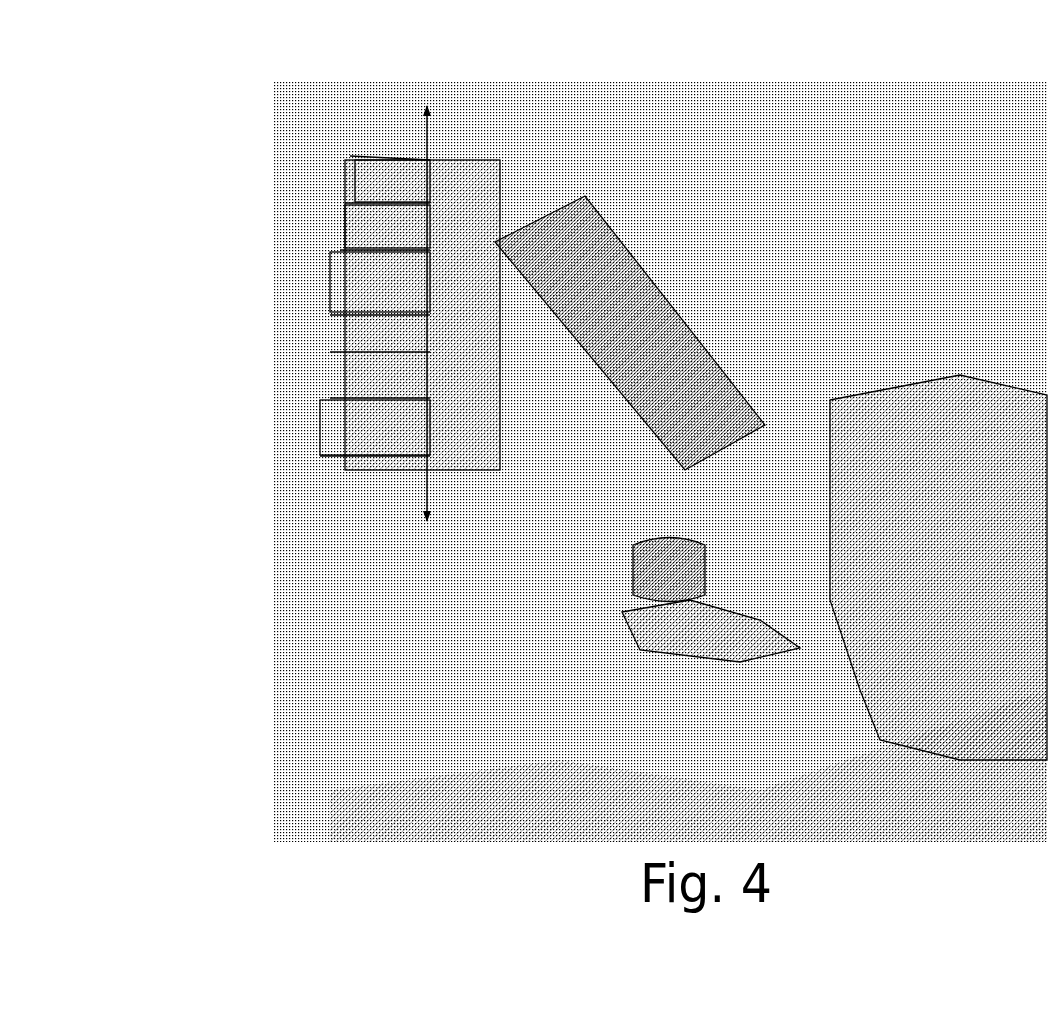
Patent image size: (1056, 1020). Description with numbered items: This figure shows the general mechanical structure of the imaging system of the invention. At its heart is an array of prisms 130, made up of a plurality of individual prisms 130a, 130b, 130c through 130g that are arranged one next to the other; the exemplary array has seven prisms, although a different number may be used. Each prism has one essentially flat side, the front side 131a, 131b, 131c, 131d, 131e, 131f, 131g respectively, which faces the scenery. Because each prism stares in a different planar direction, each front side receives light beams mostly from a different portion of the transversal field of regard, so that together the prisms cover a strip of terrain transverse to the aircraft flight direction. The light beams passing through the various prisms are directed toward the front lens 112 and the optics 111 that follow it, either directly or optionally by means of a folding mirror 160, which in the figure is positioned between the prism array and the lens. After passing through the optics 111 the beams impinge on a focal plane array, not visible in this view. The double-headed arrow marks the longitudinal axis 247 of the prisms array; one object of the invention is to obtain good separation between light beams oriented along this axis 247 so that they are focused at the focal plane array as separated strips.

The array of prisms 130 is at (413, 165).
The prism 130a is at (367, 163).
The prism 130b is at (343, 222).
The prism 130c is at (333, 280).
The prism 130g is at (322, 445).
The front side 131a is at (390, 155).
The front side 131b is at (353, 203).
The front side 131c is at (347, 250).
The front side 131d is at (378, 315).
The front side 131e is at (368, 352).
The front side 131f is at (343, 398).
The front side 131g is at (368, 455).
The folding mirror 160 is at (623, 257).
The front lens 112 is at (633, 560).
The optics 111 is at (635, 655).
The longitudinal axis 247 is at (428, 528).